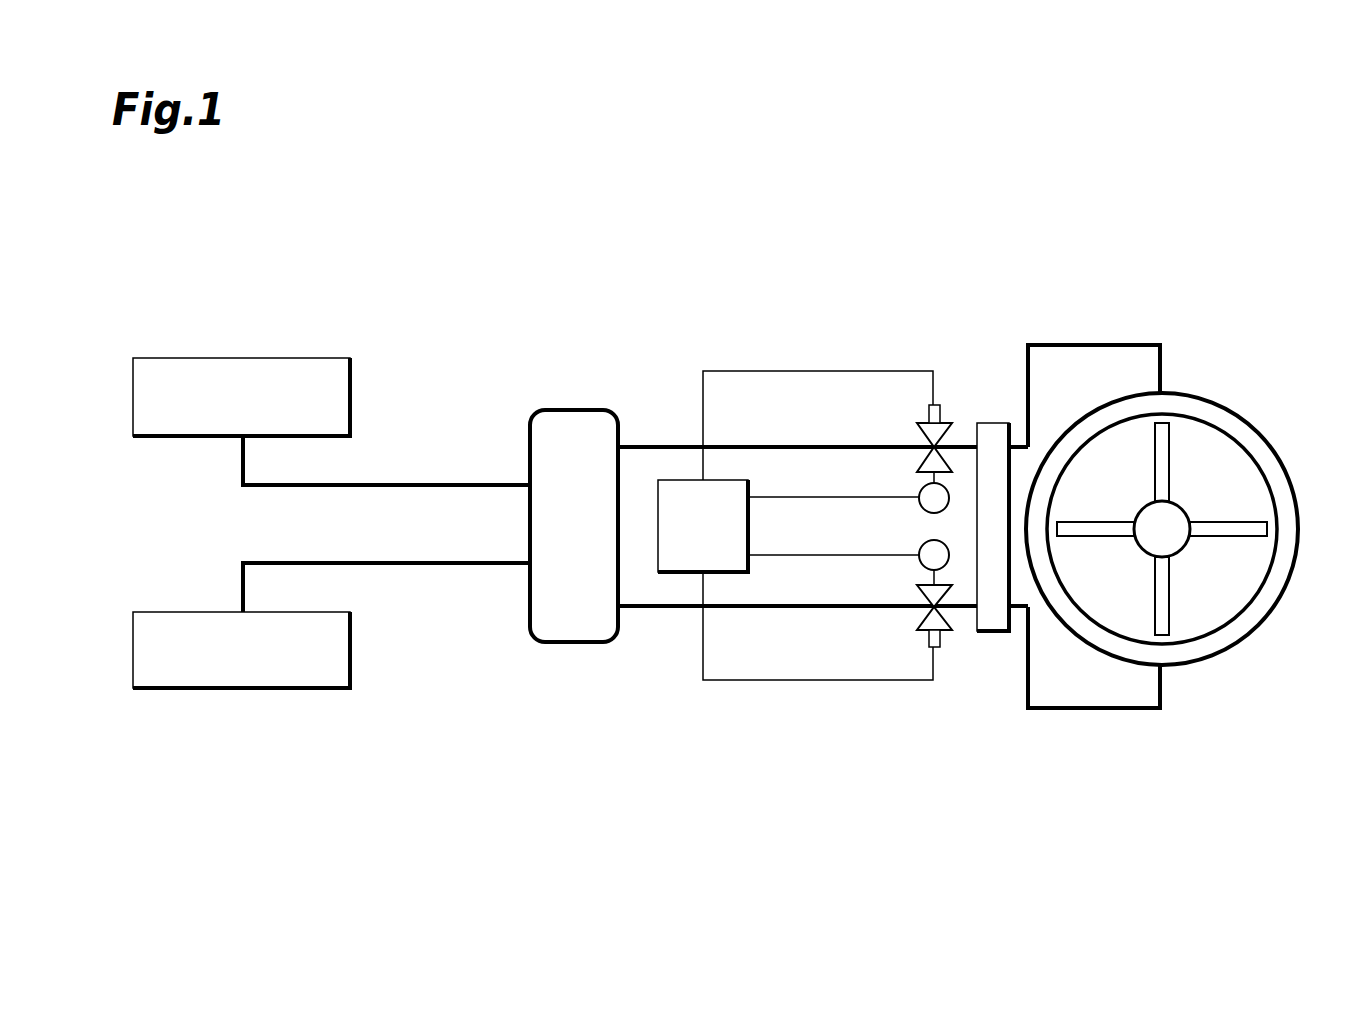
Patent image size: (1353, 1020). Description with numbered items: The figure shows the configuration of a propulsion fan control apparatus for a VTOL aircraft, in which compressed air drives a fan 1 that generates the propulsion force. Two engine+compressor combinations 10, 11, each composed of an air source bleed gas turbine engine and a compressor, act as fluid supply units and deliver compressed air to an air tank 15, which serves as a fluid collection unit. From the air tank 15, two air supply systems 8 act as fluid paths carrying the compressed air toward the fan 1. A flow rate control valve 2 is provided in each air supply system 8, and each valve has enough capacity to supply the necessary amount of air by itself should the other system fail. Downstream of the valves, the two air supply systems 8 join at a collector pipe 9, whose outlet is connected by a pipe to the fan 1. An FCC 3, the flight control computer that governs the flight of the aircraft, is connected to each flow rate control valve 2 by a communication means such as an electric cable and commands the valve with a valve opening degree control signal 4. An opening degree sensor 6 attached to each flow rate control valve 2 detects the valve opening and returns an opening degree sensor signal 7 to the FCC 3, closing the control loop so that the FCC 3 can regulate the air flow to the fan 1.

The fan 1 is at (1258, 433).
The flow rate control valve 2 is at (945, 420).
The FCC 3 is at (680, 480).
The valve opening degree control signal 4 is at (820, 498).
The opening degree sensor 6 is at (937, 405).
The opening degree sensor signal 7 is at (853, 371).
The air supply system 8 is at (782, 444).
The collector pipe 9 is at (995, 636).
The engine+compressor combination 10 is at (252, 358).
The engine+compressor combination 11 is at (282, 688).
The air tank 15 is at (590, 408).